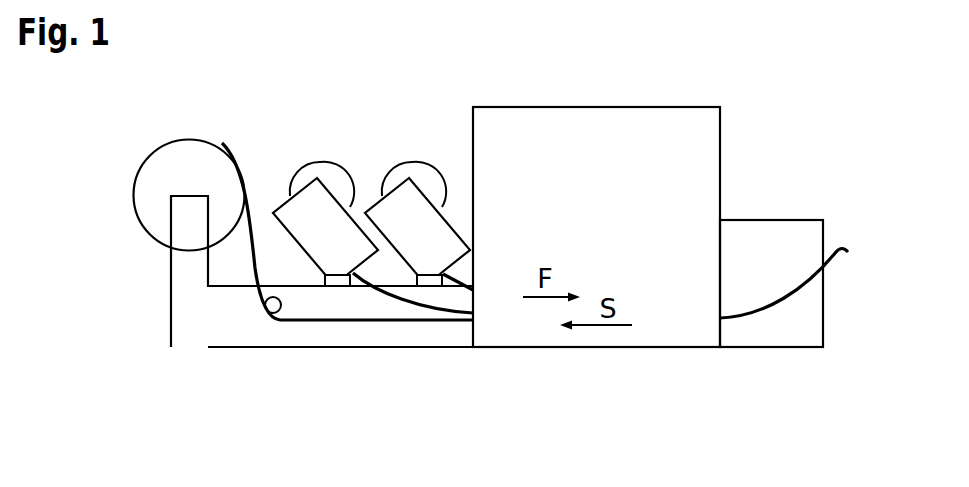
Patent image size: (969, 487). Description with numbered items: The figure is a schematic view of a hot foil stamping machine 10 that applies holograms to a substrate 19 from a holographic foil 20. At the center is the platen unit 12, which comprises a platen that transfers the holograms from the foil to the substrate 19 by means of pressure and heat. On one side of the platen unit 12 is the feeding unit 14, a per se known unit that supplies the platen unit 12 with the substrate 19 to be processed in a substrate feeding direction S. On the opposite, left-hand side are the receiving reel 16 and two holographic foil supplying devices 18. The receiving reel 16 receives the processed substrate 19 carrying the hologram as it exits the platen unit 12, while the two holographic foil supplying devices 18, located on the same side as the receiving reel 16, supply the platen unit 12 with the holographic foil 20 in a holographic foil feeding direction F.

The hot foil stamping machine 10 is at (721, 74).
The platen unit 12 is at (593, 105).
The feeding unit 14 is at (773, 218).
The receiving reel 16 is at (162, 147).
The holographic foil supplying device 18 is at (287, 195).
The substrate 19 is at (244, 160).
The holographic foil 20 is at (392, 298).